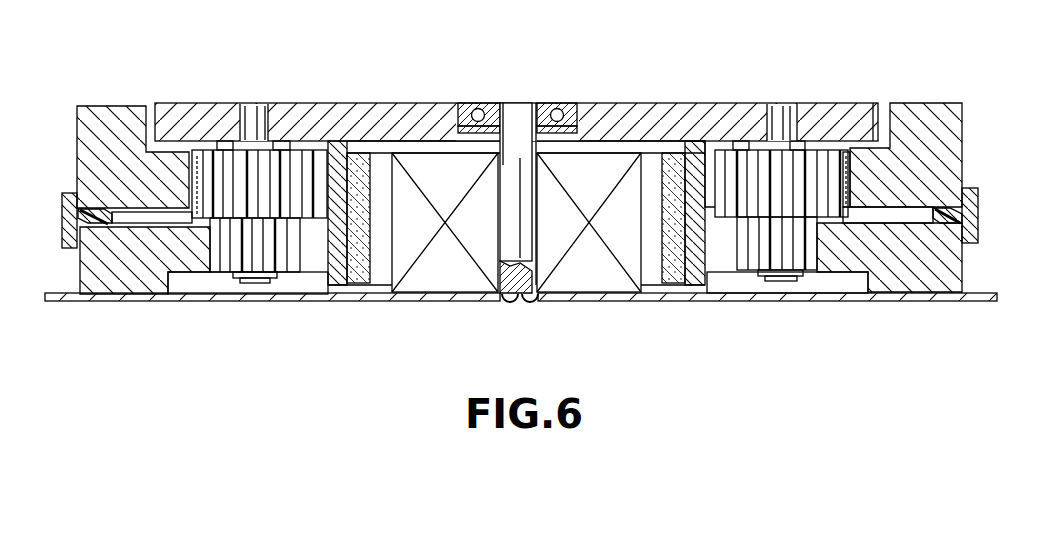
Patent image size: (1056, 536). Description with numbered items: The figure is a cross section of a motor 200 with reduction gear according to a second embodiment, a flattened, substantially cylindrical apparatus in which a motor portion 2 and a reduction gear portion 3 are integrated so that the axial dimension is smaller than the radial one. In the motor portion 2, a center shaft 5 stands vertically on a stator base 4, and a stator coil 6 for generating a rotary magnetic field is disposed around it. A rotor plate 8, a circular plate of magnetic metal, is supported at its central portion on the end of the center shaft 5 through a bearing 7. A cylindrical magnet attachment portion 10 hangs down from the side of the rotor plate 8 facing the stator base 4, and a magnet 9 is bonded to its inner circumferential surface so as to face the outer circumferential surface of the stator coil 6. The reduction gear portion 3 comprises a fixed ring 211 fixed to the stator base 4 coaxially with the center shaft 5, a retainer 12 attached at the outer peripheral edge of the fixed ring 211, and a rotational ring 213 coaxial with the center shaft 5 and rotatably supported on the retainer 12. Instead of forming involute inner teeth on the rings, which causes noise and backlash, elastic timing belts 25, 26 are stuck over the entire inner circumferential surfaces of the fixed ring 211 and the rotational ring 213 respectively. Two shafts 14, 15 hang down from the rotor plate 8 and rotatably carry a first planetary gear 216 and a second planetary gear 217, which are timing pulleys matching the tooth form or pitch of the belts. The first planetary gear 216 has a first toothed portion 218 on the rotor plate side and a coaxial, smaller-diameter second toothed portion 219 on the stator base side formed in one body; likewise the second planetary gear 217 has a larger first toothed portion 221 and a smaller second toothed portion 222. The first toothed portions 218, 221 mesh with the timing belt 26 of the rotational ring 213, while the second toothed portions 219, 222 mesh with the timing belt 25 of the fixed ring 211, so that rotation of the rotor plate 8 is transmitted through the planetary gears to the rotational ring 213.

The reduction gear portion 3 is at (73, 122).
The motor with reduction gear 200 is at (807, 18).
The motor portion 2 is at (400, 118).
The rotor plate 8 is at (615, 115).
The bearing 7 is at (469, 110).
The center shaft 5 is at (515, 117).
The stator coil 6 is at (588, 278).
The magnet 9 is at (672, 280).
The magnet attachment portion 10 is at (697, 272).
The second planetary gear 217 is at (300, 125).
The first toothed portion 221 is at (220, 155).
The shaft 15 is at (242, 120).
The second toothed portion 222 is at (297, 250).
The first planetary gear 216 is at (730, 160).
The first toothed portion 218 is at (733, 158).
The shaft 14 is at (770, 120).
The timing belt 26 is at (853, 162).
The timing belt 25 is at (837, 270).
The second toothed portion 219 is at (722, 278).
The rotational ring 213 is at (937, 110).
The retainer 12 is at (978, 197).
The fixed ring 211 is at (953, 260).
The stator base 4 is at (933, 302).